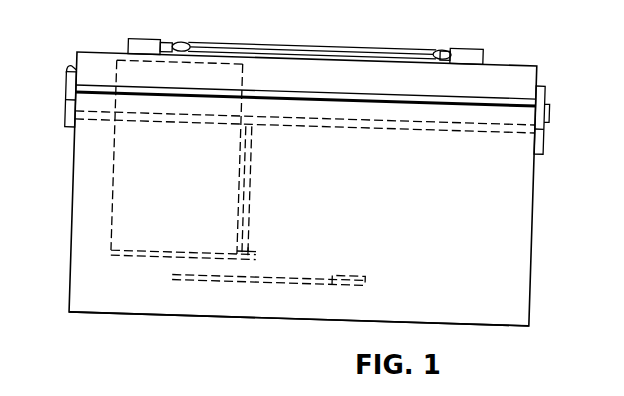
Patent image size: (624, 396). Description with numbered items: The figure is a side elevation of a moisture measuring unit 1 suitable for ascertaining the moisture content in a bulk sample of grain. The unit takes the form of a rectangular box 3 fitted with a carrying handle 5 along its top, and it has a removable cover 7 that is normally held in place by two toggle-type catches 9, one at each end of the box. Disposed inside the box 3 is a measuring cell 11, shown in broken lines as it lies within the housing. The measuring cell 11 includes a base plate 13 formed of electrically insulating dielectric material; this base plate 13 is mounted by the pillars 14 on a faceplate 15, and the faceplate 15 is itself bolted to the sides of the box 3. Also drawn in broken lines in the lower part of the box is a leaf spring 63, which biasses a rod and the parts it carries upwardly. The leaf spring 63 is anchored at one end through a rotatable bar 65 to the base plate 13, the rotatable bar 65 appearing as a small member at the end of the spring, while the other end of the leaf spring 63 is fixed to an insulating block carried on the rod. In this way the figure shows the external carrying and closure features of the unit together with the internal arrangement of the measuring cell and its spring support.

The moisture measuring unit 1 is at (127, 303).
The rectangular box 3 is at (271, 312).
The carrying handle 5 is at (300, 44).
The removable cover 7 is at (486, 76).
The toggle-type catches 9 is at (68, 118).
The measuring cell 11 is at (115, 206).
The base plate 13 is at (258, 248).
The pillars 14 is at (253, 166).
The faceplate 15 is at (375, 128).
The leaf spring 63 is at (265, 275).
The rotatable bar 65 is at (366, 273).